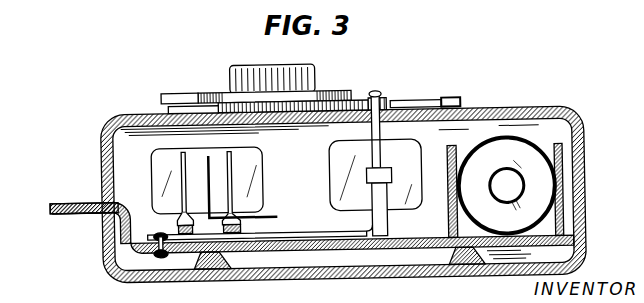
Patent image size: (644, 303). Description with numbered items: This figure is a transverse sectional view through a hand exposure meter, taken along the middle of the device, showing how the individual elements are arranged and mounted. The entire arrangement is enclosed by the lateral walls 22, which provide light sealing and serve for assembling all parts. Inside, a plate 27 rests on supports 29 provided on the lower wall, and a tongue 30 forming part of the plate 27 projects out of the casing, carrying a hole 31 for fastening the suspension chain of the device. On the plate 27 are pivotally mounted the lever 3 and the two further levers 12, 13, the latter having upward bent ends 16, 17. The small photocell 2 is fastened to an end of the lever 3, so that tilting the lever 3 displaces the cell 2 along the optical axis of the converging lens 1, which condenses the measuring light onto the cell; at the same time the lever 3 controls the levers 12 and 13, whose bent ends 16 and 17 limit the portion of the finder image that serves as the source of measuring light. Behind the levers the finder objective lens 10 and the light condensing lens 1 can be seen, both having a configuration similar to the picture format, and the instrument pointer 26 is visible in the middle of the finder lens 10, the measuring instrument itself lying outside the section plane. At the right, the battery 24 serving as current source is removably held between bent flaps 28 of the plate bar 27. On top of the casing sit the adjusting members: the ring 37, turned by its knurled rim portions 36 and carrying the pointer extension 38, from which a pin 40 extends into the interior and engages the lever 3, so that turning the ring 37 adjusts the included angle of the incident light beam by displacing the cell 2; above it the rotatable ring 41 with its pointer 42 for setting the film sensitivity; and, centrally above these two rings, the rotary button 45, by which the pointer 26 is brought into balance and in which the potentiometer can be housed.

The converging lens 1 is at (345, 178).
The photocell 2 is at (388, 181).
The lever 3 is at (375, 224).
The finder objective lens 10 is at (162, 164).
The lever 12 is at (174, 228).
The lever 13 is at (242, 229).
The upward bent lever end 16 is at (183, 196).
The upward bent lever end 17 is at (233, 183).
The lateral walls 22 is at (102, 157).
The battery 24 is at (486, 154).
The pointer 26 is at (210, 160).
The plate 27 is at (408, 246).
The bent flaps 28 is at (448, 153).
The supports 29 is at (208, 268).
The tongue 30 is at (60, 202).
The hole 31 is at (77, 214).
The knurled rim portions 36 is at (288, 111).
The ring 37 is at (170, 110).
The pointer extension 38 is at (408, 106).
The pin 40 is at (373, 132).
The rotatable ring 41 is at (226, 95).
The pointer 42 is at (176, 97).
The rotary button 45 is at (304, 80).